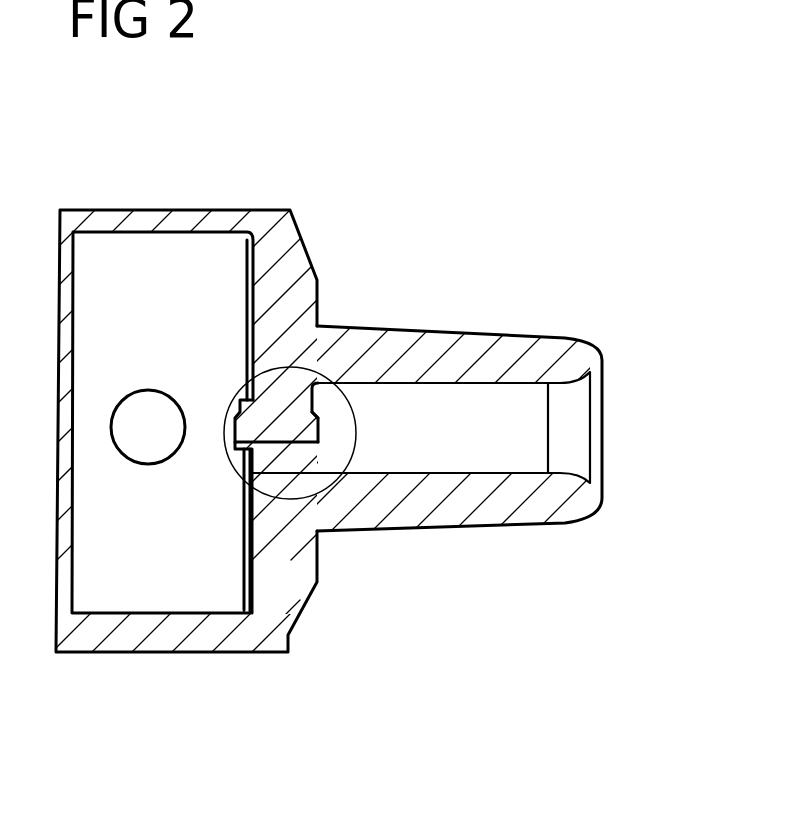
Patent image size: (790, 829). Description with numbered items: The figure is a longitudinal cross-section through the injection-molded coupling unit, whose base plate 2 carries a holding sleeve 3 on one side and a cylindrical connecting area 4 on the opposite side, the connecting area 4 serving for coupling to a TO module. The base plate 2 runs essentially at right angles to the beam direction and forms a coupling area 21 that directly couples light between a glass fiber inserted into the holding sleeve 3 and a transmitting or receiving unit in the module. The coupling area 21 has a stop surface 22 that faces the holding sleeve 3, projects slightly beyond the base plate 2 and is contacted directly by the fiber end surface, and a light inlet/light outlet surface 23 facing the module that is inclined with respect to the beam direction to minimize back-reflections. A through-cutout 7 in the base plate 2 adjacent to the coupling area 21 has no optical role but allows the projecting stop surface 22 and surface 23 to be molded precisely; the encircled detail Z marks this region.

The base plate 2 is at (297, 578).
The holding sleeve 3 is at (543, 353).
The connecting area 4 is at (162, 633).
The cutout 7 is at (277, 463).
The coupling area 21 is at (295, 430).
The stop surface 22 is at (328, 409).
The light inlet/light outlet surface 23 is at (233, 415).
The detail region Z is at (357, 420).